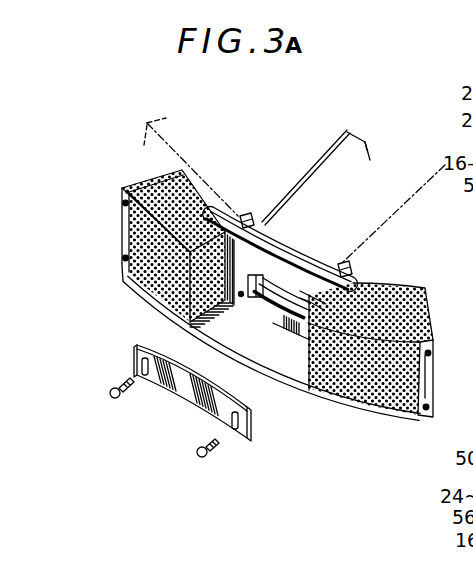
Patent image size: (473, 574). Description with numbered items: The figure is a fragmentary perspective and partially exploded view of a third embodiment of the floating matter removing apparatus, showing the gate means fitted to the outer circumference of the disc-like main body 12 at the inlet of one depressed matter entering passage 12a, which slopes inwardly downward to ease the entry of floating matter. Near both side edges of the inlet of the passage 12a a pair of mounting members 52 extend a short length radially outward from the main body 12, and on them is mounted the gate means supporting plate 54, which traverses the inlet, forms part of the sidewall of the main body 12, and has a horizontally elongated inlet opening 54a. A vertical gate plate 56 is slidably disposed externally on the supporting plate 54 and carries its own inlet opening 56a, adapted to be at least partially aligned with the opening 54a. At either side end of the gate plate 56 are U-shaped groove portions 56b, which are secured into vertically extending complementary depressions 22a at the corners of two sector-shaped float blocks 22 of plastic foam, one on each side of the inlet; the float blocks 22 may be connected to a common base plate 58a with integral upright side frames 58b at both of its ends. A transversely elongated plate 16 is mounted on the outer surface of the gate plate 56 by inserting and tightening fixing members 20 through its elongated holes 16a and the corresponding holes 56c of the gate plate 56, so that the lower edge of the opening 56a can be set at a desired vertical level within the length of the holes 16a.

The main body 12 is at (309, 140).
The depressed matter entering passage 12a is at (370, 193).
The transversely elongated plate 16 is at (185, 398).
The hole 16a is at (141, 366).
The fixing member 20 is at (111, 395).
The float block 22 is at (152, 190).
The complementary depression 22a is at (216, 202).
The mounting member 52 is at (247, 213).
The gate means supporting plate 54 is at (306, 256).
The inlet opening 54a is at (323, 302).
The gate plate 56 is at (307, 287).
The inlet opening 56a is at (270, 308).
The groove portion 56b is at (237, 207).
The hole 56c is at (241, 291).
The common base plate 58a is at (243, 352).
The upright side frame 58b is at (122, 222).